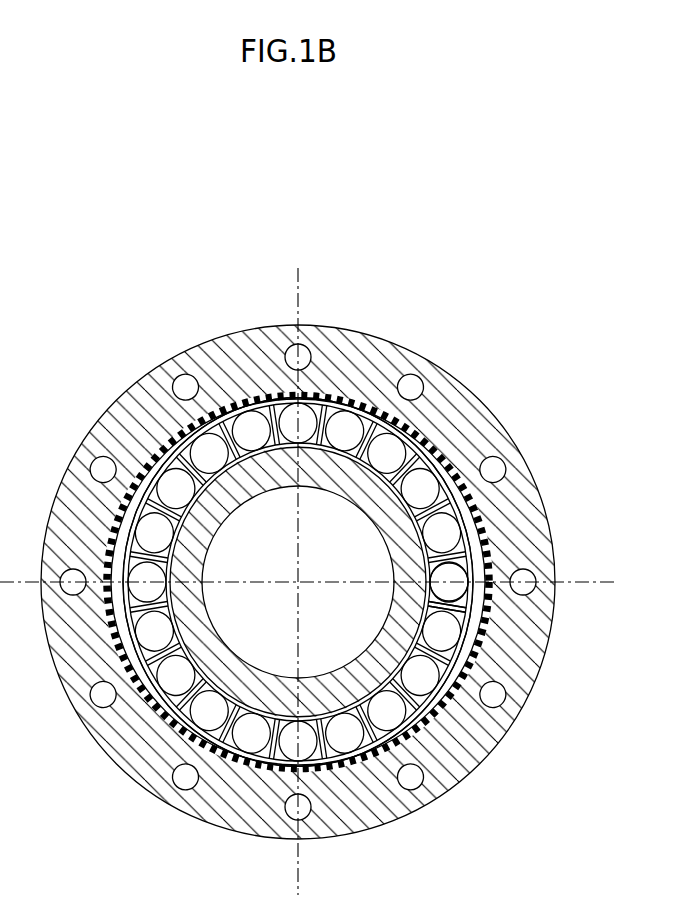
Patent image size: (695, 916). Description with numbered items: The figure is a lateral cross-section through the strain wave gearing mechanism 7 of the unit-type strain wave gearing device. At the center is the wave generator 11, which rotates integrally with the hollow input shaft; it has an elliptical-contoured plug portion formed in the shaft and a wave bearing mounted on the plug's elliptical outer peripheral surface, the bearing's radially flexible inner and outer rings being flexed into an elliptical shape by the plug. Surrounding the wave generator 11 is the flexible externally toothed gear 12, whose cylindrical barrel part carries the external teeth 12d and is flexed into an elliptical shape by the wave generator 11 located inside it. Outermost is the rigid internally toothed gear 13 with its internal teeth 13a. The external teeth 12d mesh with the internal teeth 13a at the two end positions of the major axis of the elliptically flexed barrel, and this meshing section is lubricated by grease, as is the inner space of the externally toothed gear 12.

The strain wave gearing mechanism 7 is at (340, 313).
The wave generator 11 is at (390, 582).
The externally toothed gear 12 is at (362, 582).
The external teeth 12d is at (482, 507).
The internally toothed gear 13 is at (298, 567).
The internal teeth 13a is at (415, 440).